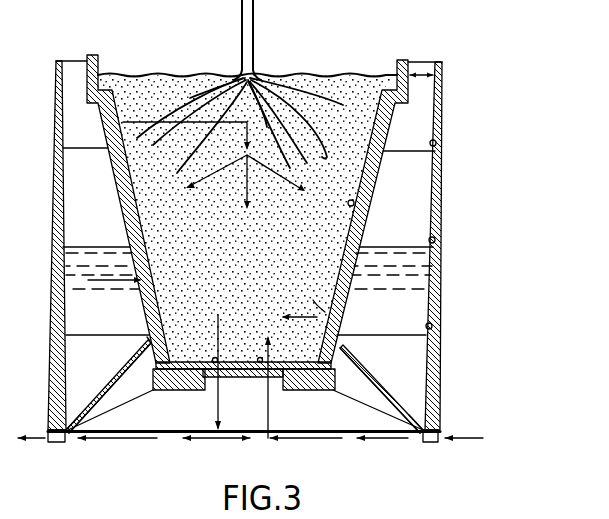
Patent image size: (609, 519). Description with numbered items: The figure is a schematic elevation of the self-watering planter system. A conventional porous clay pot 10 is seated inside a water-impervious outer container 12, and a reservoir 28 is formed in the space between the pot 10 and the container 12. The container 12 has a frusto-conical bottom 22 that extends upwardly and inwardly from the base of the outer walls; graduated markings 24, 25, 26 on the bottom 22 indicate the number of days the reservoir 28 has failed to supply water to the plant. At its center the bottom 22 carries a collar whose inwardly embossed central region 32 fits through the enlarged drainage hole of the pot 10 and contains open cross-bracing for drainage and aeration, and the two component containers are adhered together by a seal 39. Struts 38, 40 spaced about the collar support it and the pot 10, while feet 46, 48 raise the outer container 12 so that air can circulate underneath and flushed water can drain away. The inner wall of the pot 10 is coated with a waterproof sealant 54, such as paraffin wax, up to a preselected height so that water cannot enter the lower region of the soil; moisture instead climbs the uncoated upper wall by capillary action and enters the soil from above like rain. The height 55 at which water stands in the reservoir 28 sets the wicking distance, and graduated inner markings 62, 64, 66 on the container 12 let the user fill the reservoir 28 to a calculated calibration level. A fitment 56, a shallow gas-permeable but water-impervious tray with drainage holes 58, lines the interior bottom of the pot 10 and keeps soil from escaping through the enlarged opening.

The porous clay pot 10 is at (377, 175).
The water-impervious container 12 is at (442, 285).
The bottom 22 is at (402, 407).
The graduated marking 24 is at (128, 362).
The graduated marking 25 is at (105, 380).
The graduated marking 26 is at (80, 402).
The reservoir 28 is at (427, 63).
The central region of collar 32 is at (245, 378).
The strut 38 is at (124, 390).
The seal 39 is at (147, 337).
The strut 40 is at (360, 383).
The foot 46 is at (62, 443).
The foot 48 is at (430, 442).
The waterproof sealant coating 54 is at (354, 204).
The water height 55 is at (91, 252).
The fitment 56 is at (313, 300).
The drainage hole 58 is at (215, 358).
The inner marking 62 is at (435, 141).
The inner marking 64 is at (435, 239).
The inner marking 66 is at (442, 325).